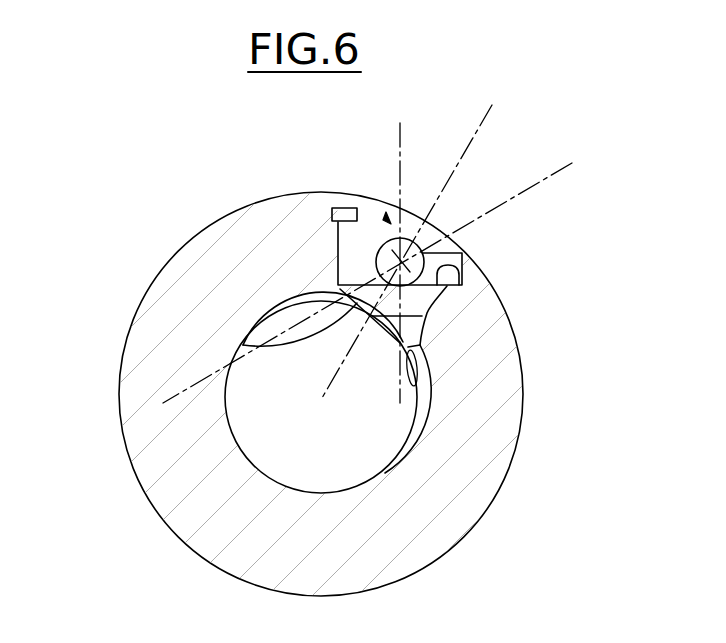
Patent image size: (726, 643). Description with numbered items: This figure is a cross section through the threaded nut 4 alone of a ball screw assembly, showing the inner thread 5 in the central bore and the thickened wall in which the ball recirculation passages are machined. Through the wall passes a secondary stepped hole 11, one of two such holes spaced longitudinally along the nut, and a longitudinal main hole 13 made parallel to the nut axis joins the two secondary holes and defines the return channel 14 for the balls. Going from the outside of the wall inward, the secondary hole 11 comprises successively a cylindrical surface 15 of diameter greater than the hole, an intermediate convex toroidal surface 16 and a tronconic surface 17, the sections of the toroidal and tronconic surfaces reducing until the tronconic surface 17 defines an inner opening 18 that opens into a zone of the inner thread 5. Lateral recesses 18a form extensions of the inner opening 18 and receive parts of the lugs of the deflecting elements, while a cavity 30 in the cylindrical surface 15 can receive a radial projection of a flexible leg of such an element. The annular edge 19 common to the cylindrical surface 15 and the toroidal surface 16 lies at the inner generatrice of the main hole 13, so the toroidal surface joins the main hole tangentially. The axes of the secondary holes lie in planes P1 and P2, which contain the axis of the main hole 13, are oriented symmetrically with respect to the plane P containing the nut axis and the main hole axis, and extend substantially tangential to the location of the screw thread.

The threaded nut 4 is at (132, 447).
The inner thread 5 is at (413, 447).
The secondary stepped hole 11 is at (388, 217).
The longitudinal main hole 13 is at (425, 255).
The return channel 14 is at (388, 257).
The cylindrical surface 15 is at (348, 263).
The intermediate convex toroidal surface 16 is at (412, 302).
The tronconic surface 17 is at (413, 337).
The inner opening 18 is at (432, 392).
The recess 18a is at (243, 345).
The annular edge 19 is at (463, 262).
The cavity 30 is at (342, 213).
The plane P is at (480, 124).
The plane P1 is at (402, 134).
The plane P2 is at (542, 180).